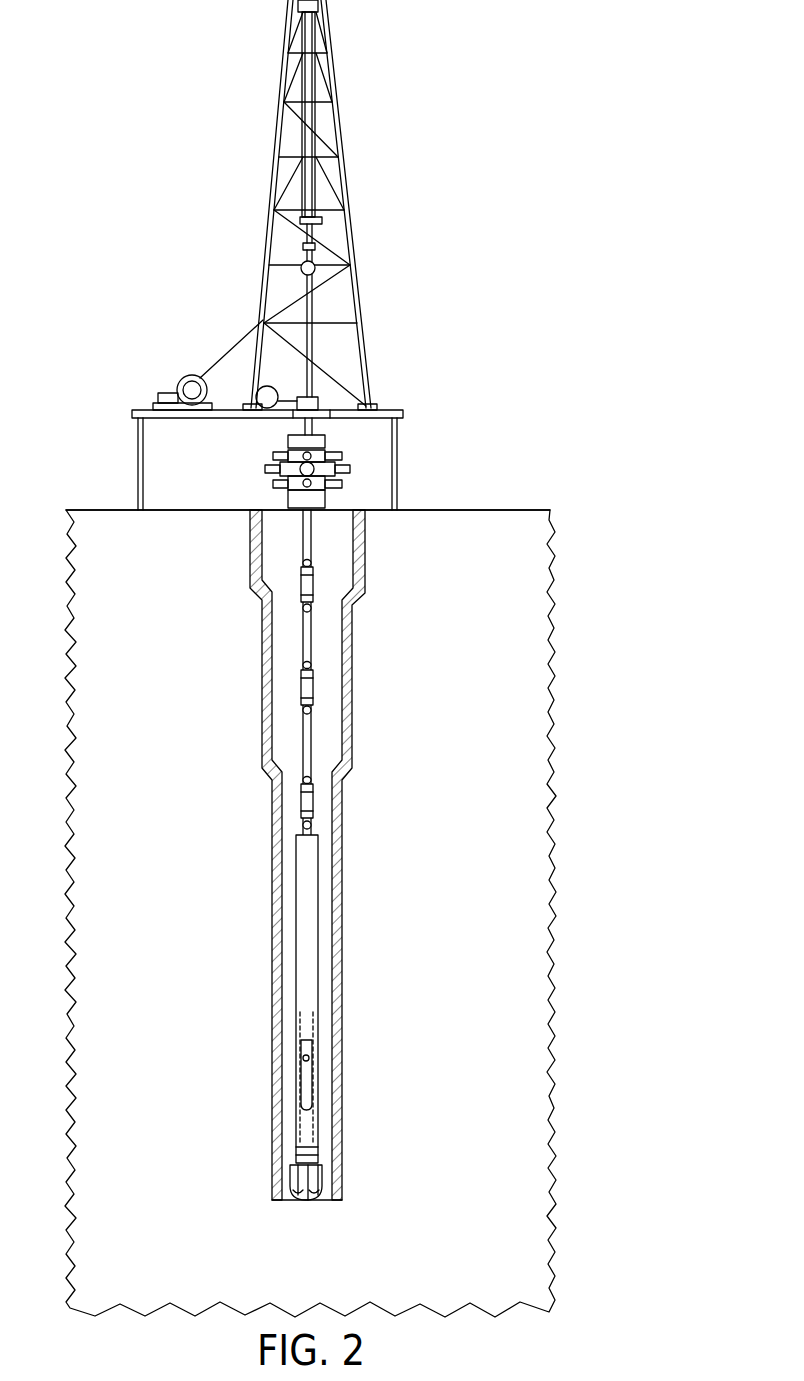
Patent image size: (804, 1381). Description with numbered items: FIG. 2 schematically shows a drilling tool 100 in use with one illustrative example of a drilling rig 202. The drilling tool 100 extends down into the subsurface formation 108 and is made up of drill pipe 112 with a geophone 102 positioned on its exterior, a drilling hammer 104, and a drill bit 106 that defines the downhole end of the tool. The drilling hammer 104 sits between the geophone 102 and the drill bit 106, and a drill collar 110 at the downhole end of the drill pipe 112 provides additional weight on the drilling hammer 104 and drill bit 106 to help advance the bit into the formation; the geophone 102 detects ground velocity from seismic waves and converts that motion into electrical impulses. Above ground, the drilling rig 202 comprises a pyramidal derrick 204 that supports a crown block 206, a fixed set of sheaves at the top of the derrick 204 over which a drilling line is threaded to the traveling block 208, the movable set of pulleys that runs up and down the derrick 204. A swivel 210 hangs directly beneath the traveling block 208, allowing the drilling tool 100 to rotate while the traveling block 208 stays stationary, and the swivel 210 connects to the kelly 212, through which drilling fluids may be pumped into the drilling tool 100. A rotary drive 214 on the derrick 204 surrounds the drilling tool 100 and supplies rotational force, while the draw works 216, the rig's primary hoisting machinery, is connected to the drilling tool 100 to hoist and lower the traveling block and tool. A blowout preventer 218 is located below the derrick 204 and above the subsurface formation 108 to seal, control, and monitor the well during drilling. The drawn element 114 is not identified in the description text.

The drilling tool 100 is at (230, 522).
The geophone 102 is at (301, 585).
The drilling hammer 104 is at (315, 1085).
The drill bit 106 is at (320, 1177).
The subsurface formation 108 is at (476, 745).
The drill collar 110 is at (318, 902).
The drill pipe 112 is at (312, 536).
The casing string / wellbore wall 114 is at (273, 859).
The drilling rig 202 is at (250, 130).
The derrick 204 is at (333, 84).
The crown block 206 is at (318, 4).
The traveling block 208 is at (323, 219).
The swivel 210 is at (316, 264).
The kelly 212 is at (313, 310).
The rotary drive 214 is at (258, 404).
The draw works 216 is at (188, 374).
The blowout preventer 218 is at (348, 468).